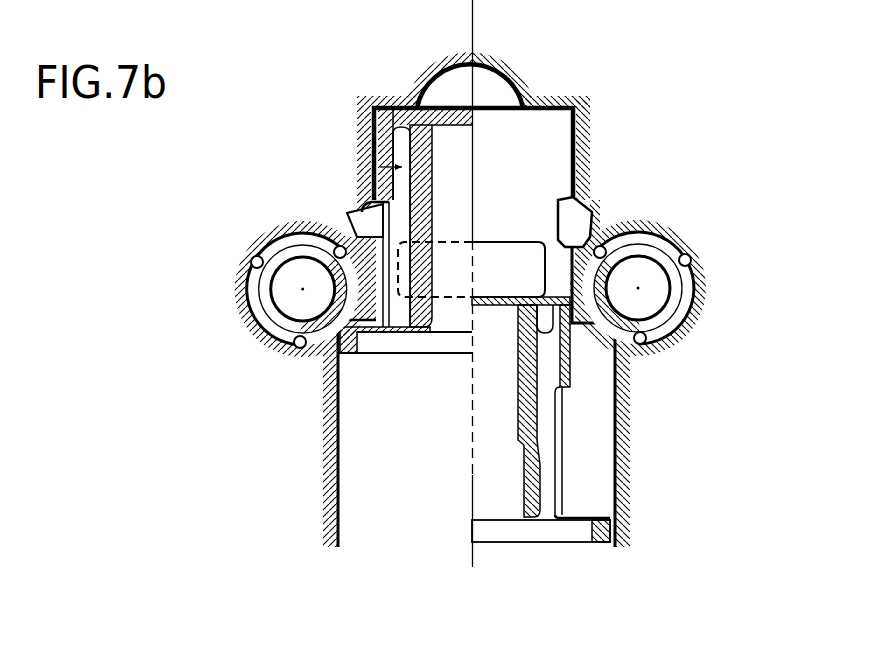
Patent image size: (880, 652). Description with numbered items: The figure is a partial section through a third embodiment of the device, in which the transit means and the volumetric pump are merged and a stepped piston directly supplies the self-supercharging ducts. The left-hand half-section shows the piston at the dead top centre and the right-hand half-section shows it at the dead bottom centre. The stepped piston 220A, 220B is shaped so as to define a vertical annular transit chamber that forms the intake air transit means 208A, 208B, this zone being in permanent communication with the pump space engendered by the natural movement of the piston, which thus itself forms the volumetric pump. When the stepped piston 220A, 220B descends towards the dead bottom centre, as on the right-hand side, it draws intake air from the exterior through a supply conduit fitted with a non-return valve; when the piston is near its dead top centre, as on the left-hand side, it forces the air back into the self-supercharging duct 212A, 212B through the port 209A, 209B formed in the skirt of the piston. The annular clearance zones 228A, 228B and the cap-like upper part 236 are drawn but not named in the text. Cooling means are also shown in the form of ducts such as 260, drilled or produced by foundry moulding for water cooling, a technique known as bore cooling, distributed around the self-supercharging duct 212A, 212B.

The intake air transit means 208A is at (368, 155).
The intake air transit means 208B is at (549, 477).
The port 209A is at (357, 218).
The port 209B is at (560, 432).
The self-supercharging duct 212A is at (267, 235).
The self-supercharging duct 212B is at (663, 233).
The stepped piston 220A is at (430, 320).
The stepped piston 220B is at (525, 493).
The clearance gap 228A is at (393, 182).
The clearance gap 228B is at (548, 502).
The cap 236 is at (540, 153).
The cooling duct 260 is at (300, 348).